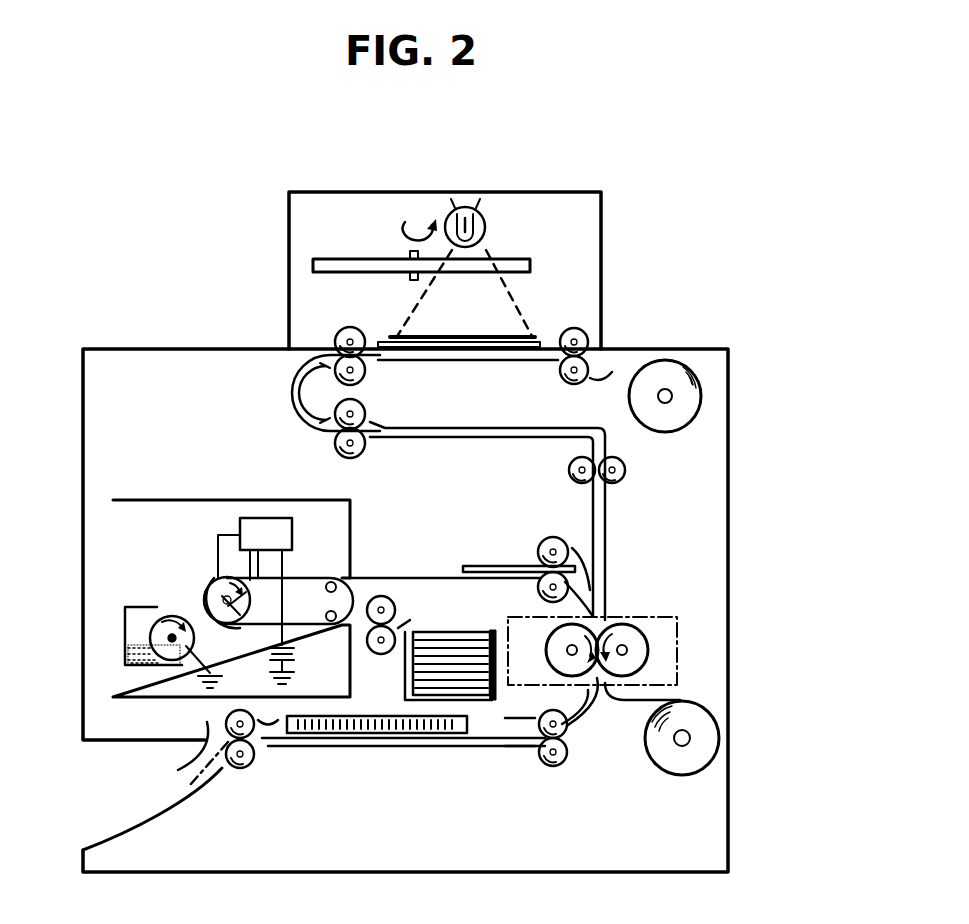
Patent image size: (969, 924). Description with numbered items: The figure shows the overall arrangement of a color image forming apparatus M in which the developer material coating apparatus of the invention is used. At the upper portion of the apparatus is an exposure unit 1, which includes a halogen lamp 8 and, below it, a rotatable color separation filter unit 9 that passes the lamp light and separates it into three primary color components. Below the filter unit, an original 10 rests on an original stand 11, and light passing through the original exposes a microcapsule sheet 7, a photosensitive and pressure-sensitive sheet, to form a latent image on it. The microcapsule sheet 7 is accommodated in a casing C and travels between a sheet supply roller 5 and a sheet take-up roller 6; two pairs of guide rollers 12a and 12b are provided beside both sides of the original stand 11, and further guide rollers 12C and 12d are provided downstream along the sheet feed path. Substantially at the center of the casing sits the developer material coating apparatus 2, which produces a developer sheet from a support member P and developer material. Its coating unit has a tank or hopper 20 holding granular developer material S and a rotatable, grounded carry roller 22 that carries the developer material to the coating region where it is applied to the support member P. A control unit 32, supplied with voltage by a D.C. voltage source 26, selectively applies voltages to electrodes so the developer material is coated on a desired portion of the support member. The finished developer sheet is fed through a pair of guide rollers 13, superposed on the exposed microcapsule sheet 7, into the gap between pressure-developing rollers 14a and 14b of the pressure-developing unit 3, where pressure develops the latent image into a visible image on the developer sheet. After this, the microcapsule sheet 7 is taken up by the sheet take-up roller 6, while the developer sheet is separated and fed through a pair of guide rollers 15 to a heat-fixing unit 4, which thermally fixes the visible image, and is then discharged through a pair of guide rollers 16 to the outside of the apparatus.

The exposure unit 1 is at (607, 225).
The developer material coating apparatus 2 is at (191, 490).
The pressure-developing unit 3 is at (651, 600).
The heat-fixing unit 4 is at (405, 741).
The sheet supply roller 5 is at (693, 401).
The sheet take-up roller 6 is at (717, 744).
The microcapsule sheet 7 is at (473, 426).
The halogen lamp 8 is at (483, 214).
The color separation filter unit 9 is at (510, 263).
The original 10 is at (520, 328).
The original stand 11 is at (392, 338).
The guide rollers 12a is at (590, 368).
The guide rollers 12b is at (366, 379).
The guide rollers 12C is at (366, 450).
The guide rollers 12d is at (626, 479).
The guide rollers 13 is at (552, 548).
The pressure-developing roller 14a is at (650, 652).
The pressure-developing roller 14b is at (568, 655).
The guide rollers 15 is at (560, 762).
The guide rollers 16 is at (246, 761).
The tank (hopper) 20 is at (150, 666).
The carry roller 22 is at (188, 636).
The D.C. voltage source 26 is at (296, 655).
The control unit 32 is at (292, 536).
The support member P is at (210, 600).
The developer material S is at (138, 640).
The color image forming apparatus M is at (740, 355).
The casing C is at (729, 492).